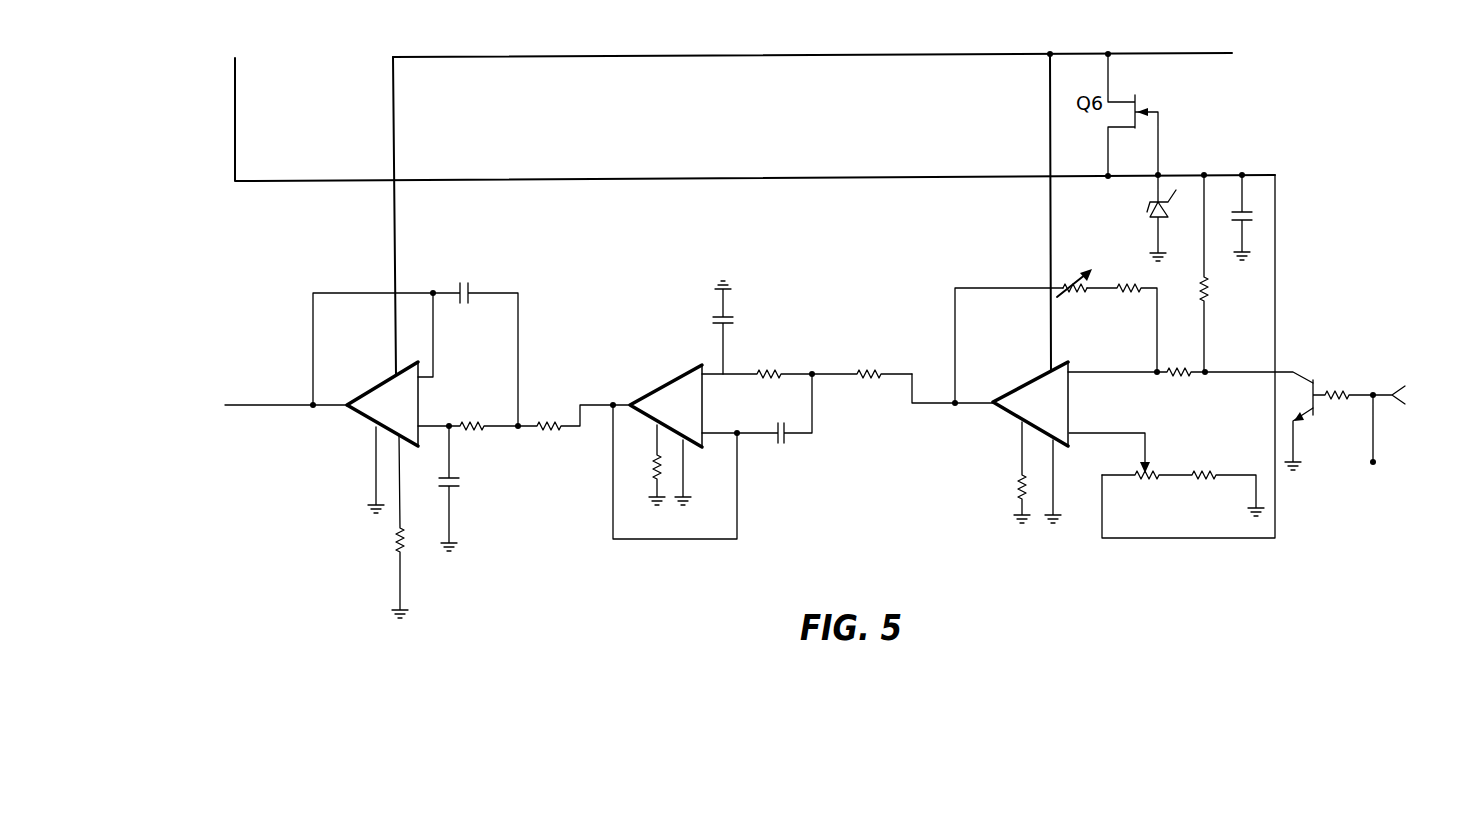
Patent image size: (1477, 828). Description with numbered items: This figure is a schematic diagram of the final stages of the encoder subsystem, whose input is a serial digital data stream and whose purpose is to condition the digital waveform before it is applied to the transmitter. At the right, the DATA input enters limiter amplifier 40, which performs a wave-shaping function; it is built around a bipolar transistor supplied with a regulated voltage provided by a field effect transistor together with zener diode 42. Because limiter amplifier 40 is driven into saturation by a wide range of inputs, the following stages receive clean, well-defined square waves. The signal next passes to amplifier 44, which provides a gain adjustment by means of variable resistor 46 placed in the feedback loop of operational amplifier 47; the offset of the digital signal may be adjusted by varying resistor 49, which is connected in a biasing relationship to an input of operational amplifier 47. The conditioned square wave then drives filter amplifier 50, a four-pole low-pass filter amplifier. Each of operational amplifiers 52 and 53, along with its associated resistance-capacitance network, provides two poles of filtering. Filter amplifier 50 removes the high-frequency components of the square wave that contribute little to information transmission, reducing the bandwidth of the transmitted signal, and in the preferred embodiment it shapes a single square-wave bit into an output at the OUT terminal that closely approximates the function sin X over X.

The limiter amplifier 40 is at (1296, 300).
The zener diode 42 is at (1148, 216).
The amplifier 44 is at (999, 262).
The variable resistor 46 is at (1067, 284).
The operational amplifier 47 is at (1069, 385).
The resistor 49 is at (1152, 465).
The filter amplifier 50 is at (554, 516).
The operational amplifier 52 is at (668, 382).
The operational amplifier 53 is at (378, 352).